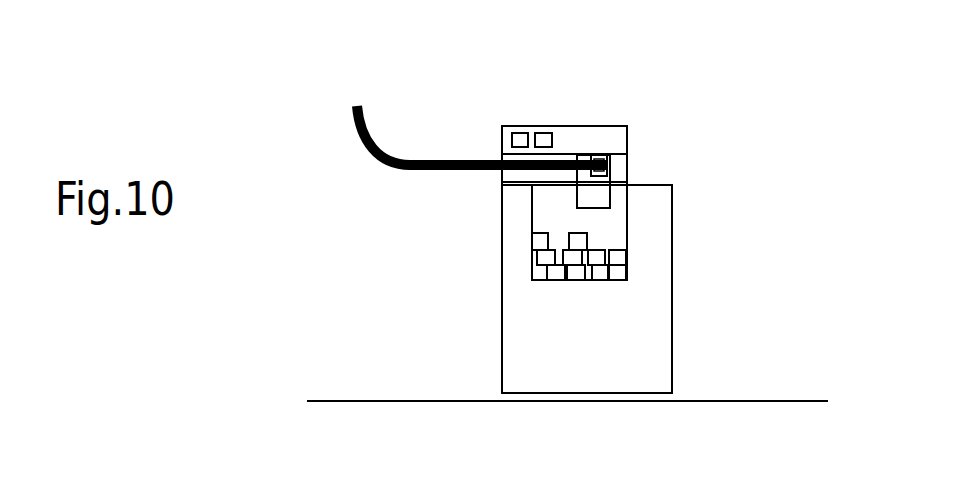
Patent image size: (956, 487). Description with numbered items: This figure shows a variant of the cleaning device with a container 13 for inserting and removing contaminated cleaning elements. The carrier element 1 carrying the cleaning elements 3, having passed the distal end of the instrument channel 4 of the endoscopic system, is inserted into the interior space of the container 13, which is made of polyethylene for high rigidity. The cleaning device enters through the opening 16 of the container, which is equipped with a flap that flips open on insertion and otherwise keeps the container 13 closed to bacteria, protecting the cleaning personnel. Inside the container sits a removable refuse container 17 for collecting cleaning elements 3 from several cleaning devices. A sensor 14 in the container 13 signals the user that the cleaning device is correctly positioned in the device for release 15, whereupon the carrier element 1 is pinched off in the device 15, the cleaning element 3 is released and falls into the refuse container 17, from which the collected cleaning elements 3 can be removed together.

The carrier element 1 is at (583, 155).
The cleaning elements 3 is at (610, 162).
The instrument channel 4 is at (377, 131).
The container 13 is at (380, 298).
The sensor 14 is at (530, 126).
The device for release 15 is at (603, 155).
The opening 16 is at (502, 175).
The refuse container 17 is at (542, 212).